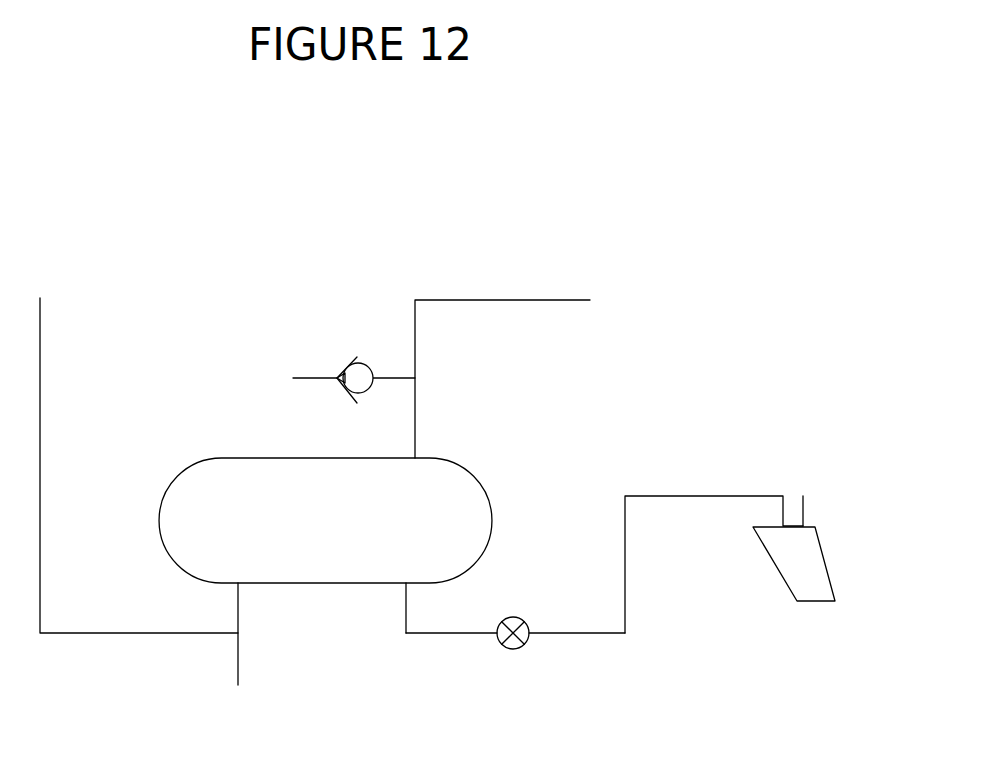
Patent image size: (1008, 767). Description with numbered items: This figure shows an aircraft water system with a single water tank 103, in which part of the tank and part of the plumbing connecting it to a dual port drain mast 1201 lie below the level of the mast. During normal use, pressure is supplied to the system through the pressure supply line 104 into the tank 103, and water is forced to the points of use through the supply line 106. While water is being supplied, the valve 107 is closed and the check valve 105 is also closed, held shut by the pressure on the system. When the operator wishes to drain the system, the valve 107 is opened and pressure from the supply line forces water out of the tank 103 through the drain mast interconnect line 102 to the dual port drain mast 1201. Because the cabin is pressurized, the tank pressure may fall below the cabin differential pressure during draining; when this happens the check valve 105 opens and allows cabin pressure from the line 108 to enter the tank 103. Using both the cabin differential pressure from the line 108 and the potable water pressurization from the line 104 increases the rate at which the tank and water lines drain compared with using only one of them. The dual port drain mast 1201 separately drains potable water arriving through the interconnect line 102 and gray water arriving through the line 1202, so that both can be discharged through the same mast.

The drain mast interconnect line 102 is at (705, 493).
The water tank 103 is at (338, 587).
The pressure supply line 104 is at (502, 300).
The check valve 105 is at (345, 367).
The supply line 106 is at (138, 635).
The valve 107 is at (520, 642).
The cabin differential pressure line 108 is at (312, 375).
The dual port drain mast 1201 is at (822, 548).
The gray water drain line 1202 is at (803, 507).